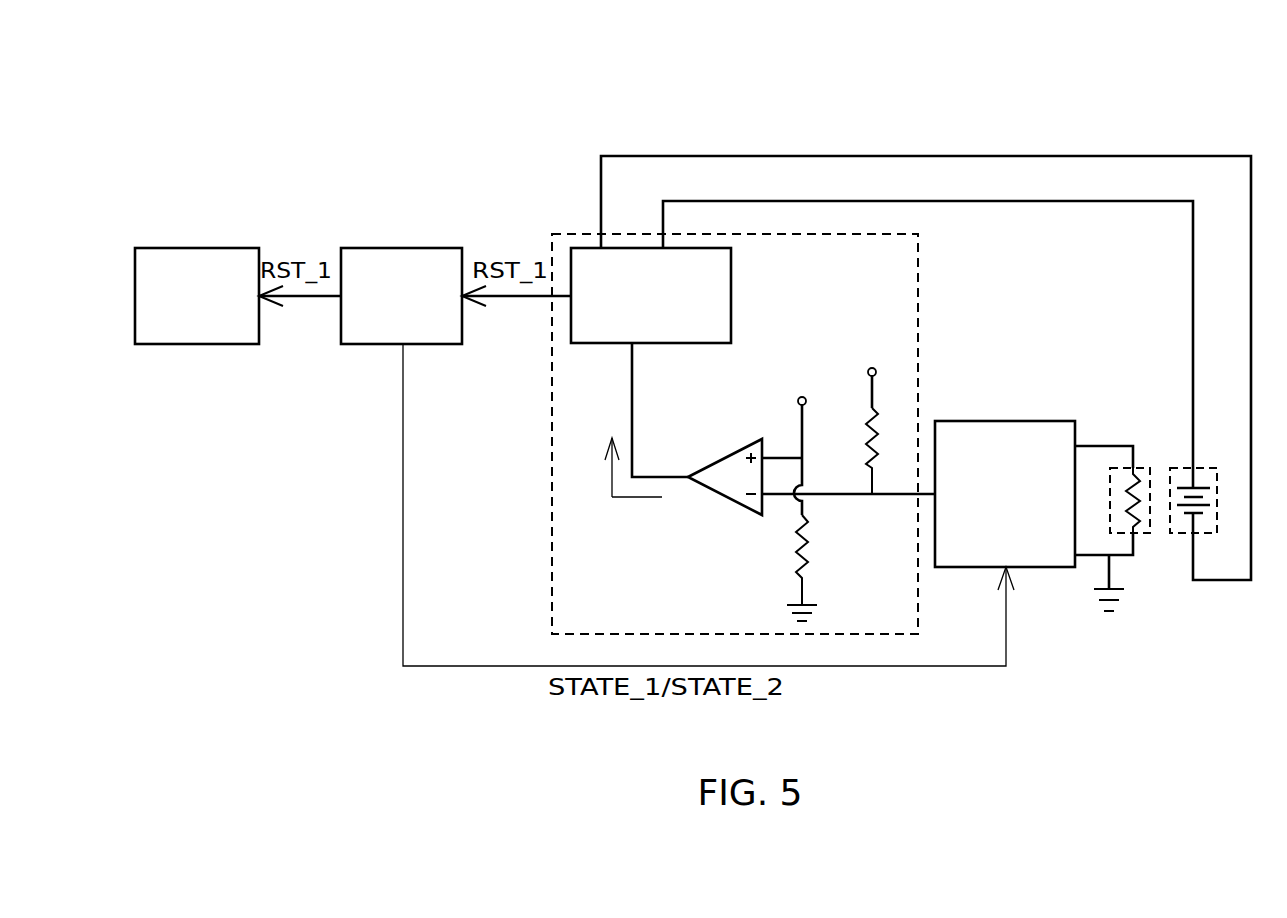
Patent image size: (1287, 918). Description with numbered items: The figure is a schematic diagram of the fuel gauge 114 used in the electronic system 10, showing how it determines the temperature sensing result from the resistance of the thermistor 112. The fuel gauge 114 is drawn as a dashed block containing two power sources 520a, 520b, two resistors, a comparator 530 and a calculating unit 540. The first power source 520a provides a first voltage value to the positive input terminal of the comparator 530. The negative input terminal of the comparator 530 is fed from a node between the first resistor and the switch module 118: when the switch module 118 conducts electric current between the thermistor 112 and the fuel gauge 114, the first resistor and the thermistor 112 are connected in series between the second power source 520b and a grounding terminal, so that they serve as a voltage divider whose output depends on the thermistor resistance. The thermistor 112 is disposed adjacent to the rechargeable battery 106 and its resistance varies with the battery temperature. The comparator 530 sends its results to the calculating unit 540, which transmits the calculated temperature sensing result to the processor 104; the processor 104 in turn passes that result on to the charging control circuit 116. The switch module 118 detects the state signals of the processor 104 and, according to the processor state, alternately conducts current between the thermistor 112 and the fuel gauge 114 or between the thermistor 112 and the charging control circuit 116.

The electronic system 10 is at (290, 123).
The charging control circuit 116 is at (198, 248).
The processor 104 is at (403, 248).
The fuel gauge 114 is at (918, 271).
The calculating unit 540 is at (731, 297).
The comparator 530 is at (726, 456).
The power source 520a is at (804, 441).
The power source 520b is at (873, 375).
The switch module 118 is at (1005, 421).
The thermistor 112 is at (1145, 468).
The rechargeable battery 106 is at (1215, 468).